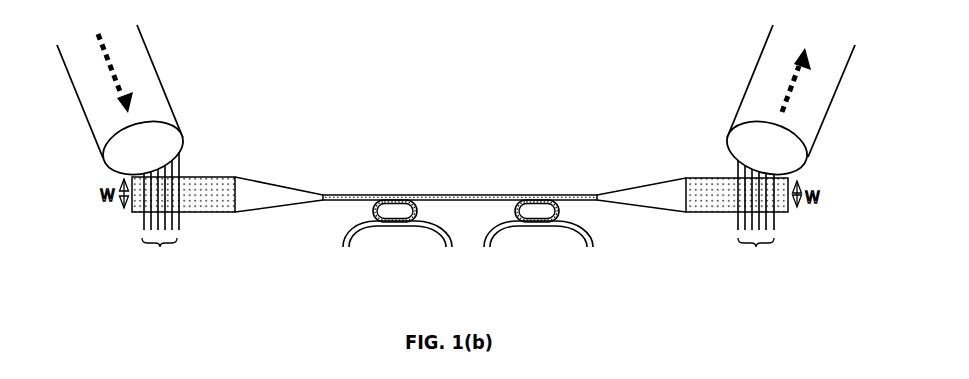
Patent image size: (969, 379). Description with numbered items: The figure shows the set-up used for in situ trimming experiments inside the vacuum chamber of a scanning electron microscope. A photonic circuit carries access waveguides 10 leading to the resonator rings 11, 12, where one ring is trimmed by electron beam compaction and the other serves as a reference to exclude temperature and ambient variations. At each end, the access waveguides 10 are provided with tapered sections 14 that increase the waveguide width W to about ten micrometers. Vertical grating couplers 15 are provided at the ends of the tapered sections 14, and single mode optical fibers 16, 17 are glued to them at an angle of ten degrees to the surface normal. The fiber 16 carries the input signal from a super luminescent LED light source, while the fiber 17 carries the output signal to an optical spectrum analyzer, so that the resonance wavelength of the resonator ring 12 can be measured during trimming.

The access waveguide 10 is at (466, 190).
The resonator ring 11 is at (362, 214).
The resonator ring 12 is at (569, 216).
The tapered section 14 is at (268, 180).
The vertical grating coupler 15 is at (460, 213).
The single mode optical fiber 16 is at (166, 83).
The single mode optical fiber 17 is at (746, 94).